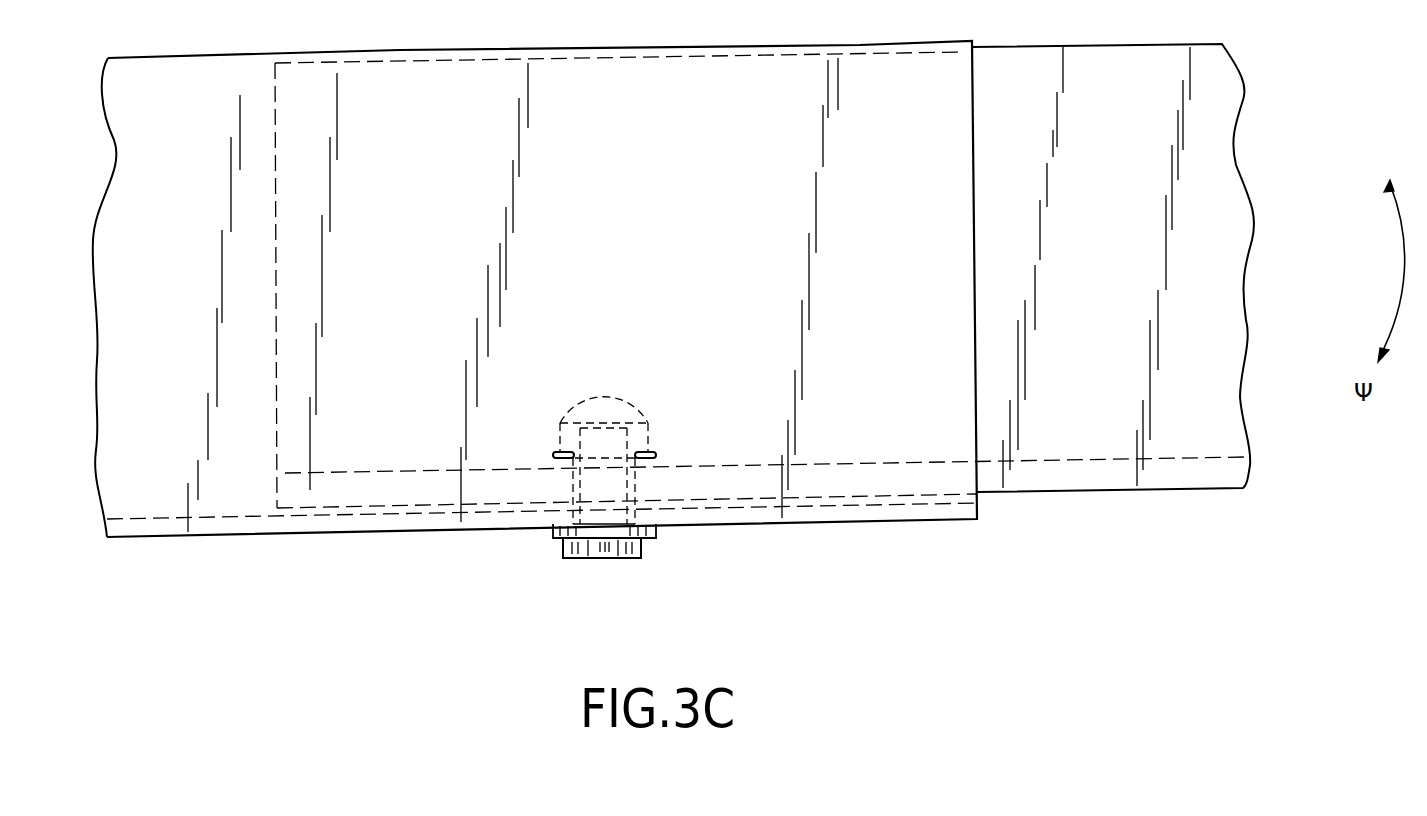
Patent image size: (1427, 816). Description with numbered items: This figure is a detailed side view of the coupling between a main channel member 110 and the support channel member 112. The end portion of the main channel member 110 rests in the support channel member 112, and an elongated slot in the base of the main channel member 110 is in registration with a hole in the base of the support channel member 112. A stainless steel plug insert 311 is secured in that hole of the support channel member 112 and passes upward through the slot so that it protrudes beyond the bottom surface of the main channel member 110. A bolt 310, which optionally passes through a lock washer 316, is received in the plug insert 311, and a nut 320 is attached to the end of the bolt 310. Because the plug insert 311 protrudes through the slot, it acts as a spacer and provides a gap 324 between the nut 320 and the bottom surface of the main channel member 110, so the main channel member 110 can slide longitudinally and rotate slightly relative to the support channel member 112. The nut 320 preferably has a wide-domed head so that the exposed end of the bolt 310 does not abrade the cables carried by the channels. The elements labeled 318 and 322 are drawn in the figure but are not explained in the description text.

The main channel member 110 is at (1122, 492).
The support channel member 112 is at (148, 538).
The bolt 310 is at (573, 559).
The plug insert 311 is at (656, 519).
The lock washer 316 is at (645, 539).
The shoulder 318 is at (550, 455).
The nut 320 is at (620, 397).
The slot 322 is at (402, 472).
The gap 324 is at (657, 455).